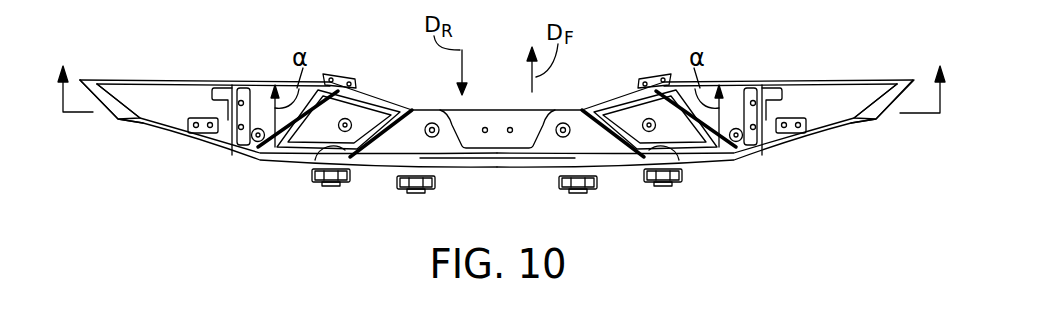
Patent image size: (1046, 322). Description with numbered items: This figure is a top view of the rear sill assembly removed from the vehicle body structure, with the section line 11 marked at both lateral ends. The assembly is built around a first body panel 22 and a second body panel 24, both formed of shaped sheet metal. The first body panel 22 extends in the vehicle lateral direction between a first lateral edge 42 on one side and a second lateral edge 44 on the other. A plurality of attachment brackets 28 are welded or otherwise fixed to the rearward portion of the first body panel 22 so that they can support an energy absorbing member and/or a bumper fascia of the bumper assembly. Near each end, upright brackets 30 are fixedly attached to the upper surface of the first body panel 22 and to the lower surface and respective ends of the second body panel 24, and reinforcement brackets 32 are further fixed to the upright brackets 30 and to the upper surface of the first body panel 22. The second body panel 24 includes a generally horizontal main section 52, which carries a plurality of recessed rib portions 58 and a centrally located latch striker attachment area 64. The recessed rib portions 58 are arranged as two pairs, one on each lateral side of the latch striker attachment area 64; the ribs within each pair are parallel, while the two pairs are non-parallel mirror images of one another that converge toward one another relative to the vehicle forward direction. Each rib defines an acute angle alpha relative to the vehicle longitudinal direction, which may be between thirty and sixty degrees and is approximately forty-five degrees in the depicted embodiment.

The section line of FIG. 11 is at (500, 72).
The first body panel 22 is at (827, 102).
The second body panel 24 is at (503, 164).
The attachment brackets 28 is at (337, 74).
The upright brackets 30 is at (226, 130).
The reinforcement brackets 32 is at (203, 134).
The first lateral edge 42 is at (104, 112).
The second lateral edge 44 is at (885, 117).
The main section 52 is at (412, 137).
The recessed rib portions 58 is at (314, 128).
The latch striker attachment area 64 is at (498, 122).